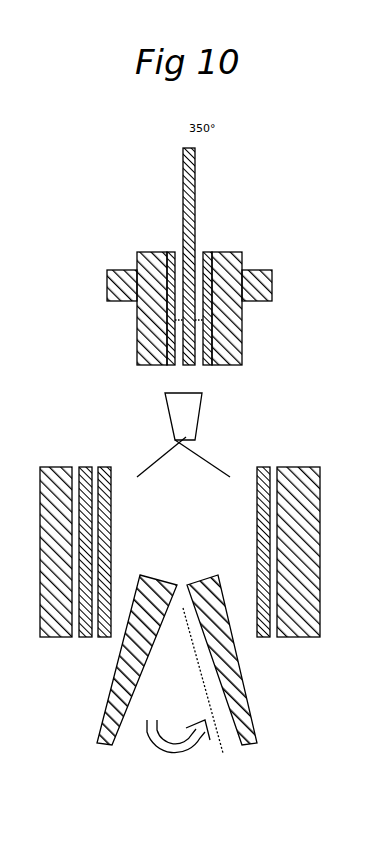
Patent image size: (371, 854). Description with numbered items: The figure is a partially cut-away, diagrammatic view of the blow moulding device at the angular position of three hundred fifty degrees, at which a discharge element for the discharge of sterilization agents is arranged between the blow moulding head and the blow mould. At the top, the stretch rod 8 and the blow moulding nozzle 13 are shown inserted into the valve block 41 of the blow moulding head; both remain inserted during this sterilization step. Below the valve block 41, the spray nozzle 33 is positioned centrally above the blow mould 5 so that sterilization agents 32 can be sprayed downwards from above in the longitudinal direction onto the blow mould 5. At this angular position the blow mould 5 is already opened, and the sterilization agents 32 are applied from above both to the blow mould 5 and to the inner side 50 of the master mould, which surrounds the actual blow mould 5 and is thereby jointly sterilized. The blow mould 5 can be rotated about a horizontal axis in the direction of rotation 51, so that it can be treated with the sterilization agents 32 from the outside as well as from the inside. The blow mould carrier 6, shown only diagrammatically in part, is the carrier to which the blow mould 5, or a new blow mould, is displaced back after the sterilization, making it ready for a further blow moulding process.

The stretch rod 8 is at (196, 170).
The valve block 41 is at (237, 253).
The blow moulding nozzle 13 is at (137, 327).
The spray nozzle 33 is at (202, 410).
The sterilization agent 32 is at (208, 460).
The blow mould carrier 6 is at (318, 440).
The inner side of the master mould 50 is at (112, 522).
The blow mould 5 is at (250, 722).
The direction of rotation 51 is at (163, 760).